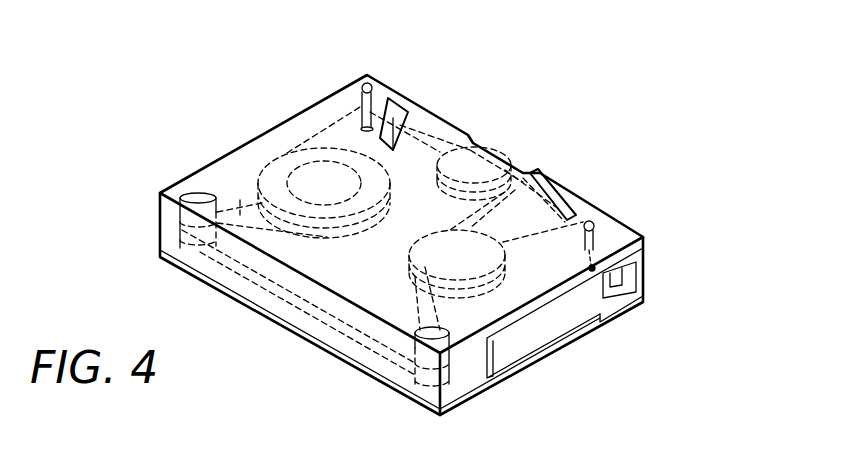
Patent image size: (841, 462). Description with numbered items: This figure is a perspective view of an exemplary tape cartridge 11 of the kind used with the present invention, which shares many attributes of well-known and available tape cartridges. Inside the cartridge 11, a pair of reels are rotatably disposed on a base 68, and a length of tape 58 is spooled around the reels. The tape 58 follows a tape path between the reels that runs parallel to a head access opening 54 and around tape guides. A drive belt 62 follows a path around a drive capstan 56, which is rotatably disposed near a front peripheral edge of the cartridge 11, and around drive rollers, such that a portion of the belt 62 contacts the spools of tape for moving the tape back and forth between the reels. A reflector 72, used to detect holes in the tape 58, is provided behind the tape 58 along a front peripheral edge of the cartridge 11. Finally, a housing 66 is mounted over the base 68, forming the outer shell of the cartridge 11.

The tape cartridge 11 is at (591, 353).
The head access opening 54 is at (557, 197).
The drive capstan 56 is at (488, 150).
The tape 58 is at (422, 135).
The drive belt 62 is at (240, 210).
The housing 66 is at (618, 237).
The base 68 is at (647, 285).
The reflector 72 is at (393, 100).